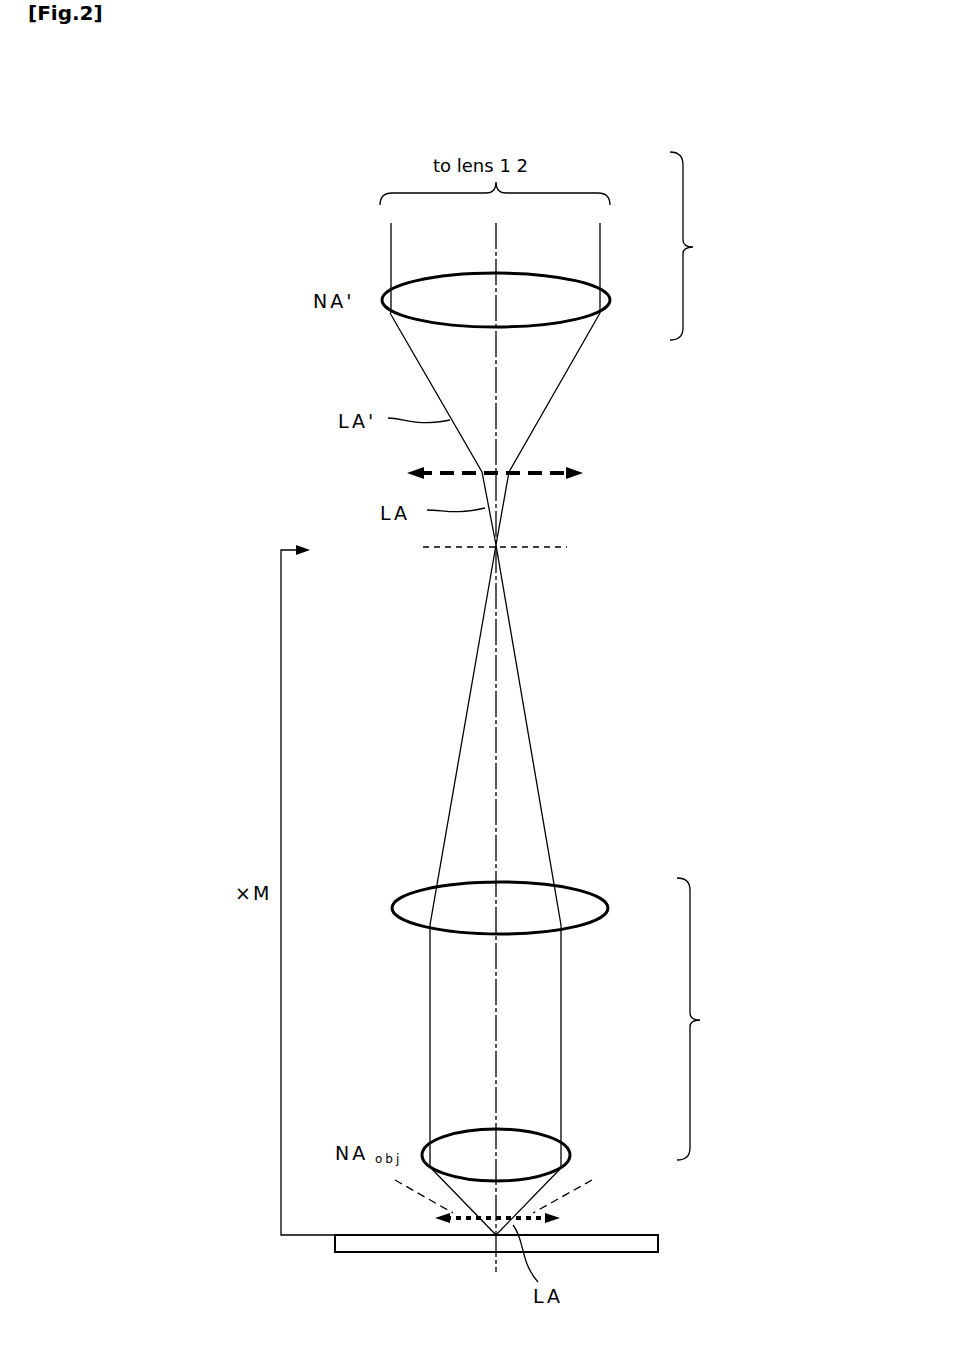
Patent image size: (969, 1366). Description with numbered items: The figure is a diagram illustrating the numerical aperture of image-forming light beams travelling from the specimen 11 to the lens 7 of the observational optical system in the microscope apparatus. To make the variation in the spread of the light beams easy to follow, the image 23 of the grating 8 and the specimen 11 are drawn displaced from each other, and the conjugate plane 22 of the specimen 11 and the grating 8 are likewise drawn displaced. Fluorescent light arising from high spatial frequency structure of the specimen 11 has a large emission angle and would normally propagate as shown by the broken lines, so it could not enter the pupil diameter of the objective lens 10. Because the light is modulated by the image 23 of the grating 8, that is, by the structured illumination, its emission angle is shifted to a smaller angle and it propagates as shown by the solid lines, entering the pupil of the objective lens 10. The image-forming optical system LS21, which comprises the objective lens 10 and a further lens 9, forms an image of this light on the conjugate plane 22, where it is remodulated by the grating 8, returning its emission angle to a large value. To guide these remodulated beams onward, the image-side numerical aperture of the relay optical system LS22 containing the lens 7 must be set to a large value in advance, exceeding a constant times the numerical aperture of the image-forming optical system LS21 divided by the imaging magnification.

The lens 7 is at (602, 300).
The grating 8 is at (506, 474).
The conjugate plane 22 is at (513, 549).
The lens 9 is at (608, 910).
The objective lens 10 is at (565, 1146).
The specimen 11 is at (658, 1236).
The image of the grating 23 is at (518, 1219).
The relay optical system LS22 is at (719, 246).
The image-forming optical system LS21 is at (729, 1019).